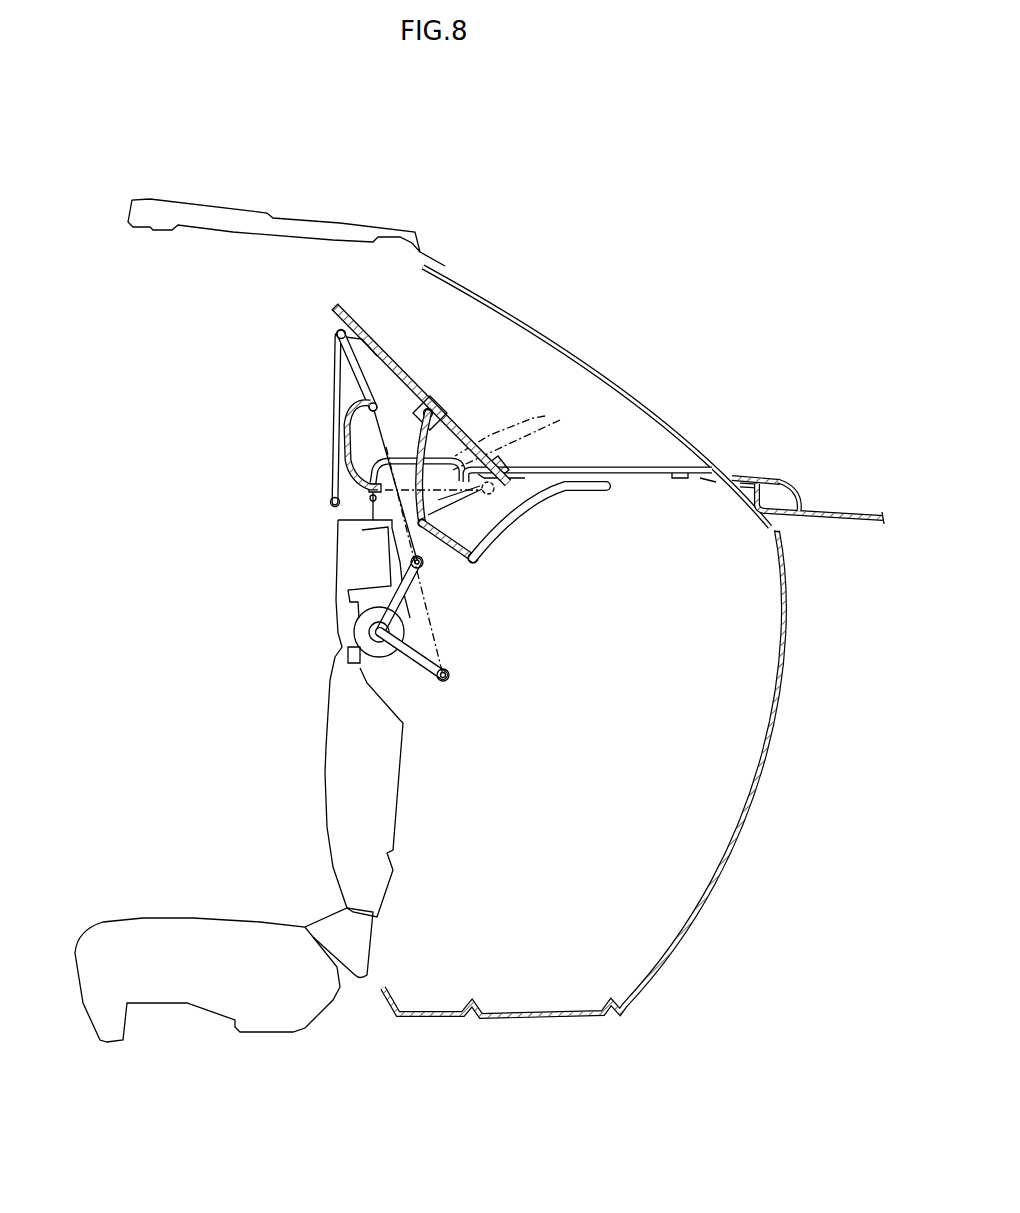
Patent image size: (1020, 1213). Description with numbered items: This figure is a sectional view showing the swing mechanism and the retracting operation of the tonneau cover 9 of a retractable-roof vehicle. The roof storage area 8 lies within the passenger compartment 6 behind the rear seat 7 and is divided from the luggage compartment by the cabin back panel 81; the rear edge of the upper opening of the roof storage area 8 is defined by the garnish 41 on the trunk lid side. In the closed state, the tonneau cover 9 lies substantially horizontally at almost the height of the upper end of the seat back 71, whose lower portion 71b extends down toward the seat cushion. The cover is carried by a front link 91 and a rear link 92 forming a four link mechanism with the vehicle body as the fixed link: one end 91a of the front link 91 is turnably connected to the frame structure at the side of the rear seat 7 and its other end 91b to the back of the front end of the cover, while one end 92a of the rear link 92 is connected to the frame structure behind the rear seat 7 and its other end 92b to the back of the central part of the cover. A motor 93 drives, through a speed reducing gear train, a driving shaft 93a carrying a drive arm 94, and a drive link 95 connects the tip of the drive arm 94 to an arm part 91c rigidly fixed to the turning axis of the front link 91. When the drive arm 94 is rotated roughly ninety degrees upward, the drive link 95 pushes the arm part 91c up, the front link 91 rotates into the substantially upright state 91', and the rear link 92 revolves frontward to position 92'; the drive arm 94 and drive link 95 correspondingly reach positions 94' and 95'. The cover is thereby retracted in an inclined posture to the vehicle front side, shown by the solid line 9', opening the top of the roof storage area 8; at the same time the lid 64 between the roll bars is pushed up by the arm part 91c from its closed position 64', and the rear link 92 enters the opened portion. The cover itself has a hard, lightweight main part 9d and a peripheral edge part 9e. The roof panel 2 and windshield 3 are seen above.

The roof panel 2 is at (217, 200).
The windshield 3 is at (667, 428).
The garnish 41 is at (787, 481).
The passenger compartment 6 is at (194, 616).
The rear seat 7 is at (161, 912).
The roof storage area 8 is at (584, 801).
The cabin back panel 81 is at (723, 850).
The tonneau cover 9 is at (606, 542).
The tonneau cover in retracted position 9' is at (420, 393).
The main part 9d is at (650, 474).
The peripheral edge part 9e is at (717, 490).
The lid 64 is at (474, 441).
The roof cross member in retracted position 64' is at (303, 456).
The seat back 71 is at (333, 585).
The pillar lower portion 71b is at (327, 777).
The front link 91 is at (496, 535).
The front link in upright state 91' is at (285, 419).
The one end of front link 91a is at (330, 506).
The other end of front link 91b is at (336, 334).
The arm part 91c is at (358, 370).
The rear link 92 is at (533, 526).
The rear link in revolved position 92' is at (485, 446).
The one end of rear link 92a is at (478, 560).
The other end of rear link 92b is at (436, 406).
The motor 93 is at (348, 565).
The driving shaft 93a is at (377, 630).
The drive arm 94 is at (428, 706).
The drive arm in retracted position 94' is at (459, 595).
The drive link 95 is at (465, 566).
The connecting link in retracted position 95' is at (322, 485).